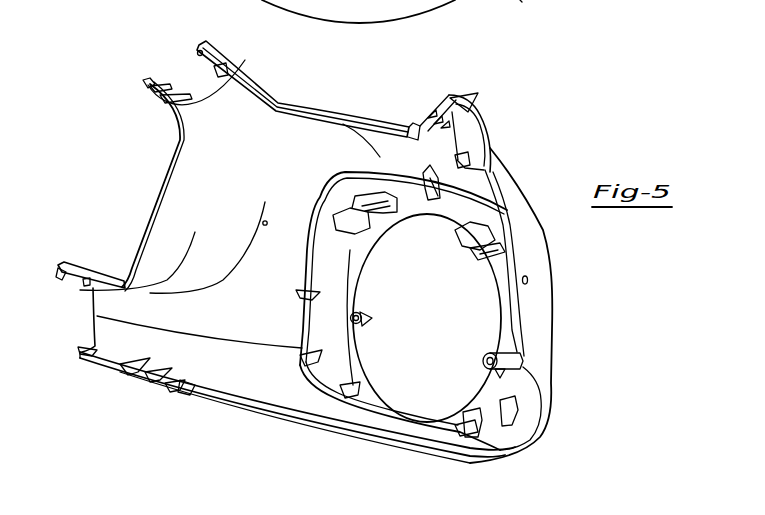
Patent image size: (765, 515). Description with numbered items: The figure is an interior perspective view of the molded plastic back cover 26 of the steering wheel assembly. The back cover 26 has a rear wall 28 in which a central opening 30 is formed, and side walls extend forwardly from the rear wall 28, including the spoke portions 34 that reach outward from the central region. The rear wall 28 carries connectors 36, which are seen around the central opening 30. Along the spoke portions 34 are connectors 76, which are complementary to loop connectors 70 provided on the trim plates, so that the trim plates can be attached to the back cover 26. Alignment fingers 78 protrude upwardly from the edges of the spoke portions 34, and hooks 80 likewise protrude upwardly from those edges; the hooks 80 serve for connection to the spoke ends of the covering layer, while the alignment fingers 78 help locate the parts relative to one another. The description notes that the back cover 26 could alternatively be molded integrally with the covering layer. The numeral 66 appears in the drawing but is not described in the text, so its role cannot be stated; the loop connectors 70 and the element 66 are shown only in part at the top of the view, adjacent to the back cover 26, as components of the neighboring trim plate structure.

The back cover 26 is at (538, 205).
The rear wall 28 is at (345, 275).
The central opening 30 is at (362, 320).
The spoke portions 34 is at (224, 56).
The connectors 36 is at (470, 248).
The adjacent component 66 is at (532, 7).
The loop connectors 70 is at (497, 0).
The connectors 76 is at (418, 124).
The alignment fingers 78 is at (225, 68).
The hooks 80 is at (147, 82).